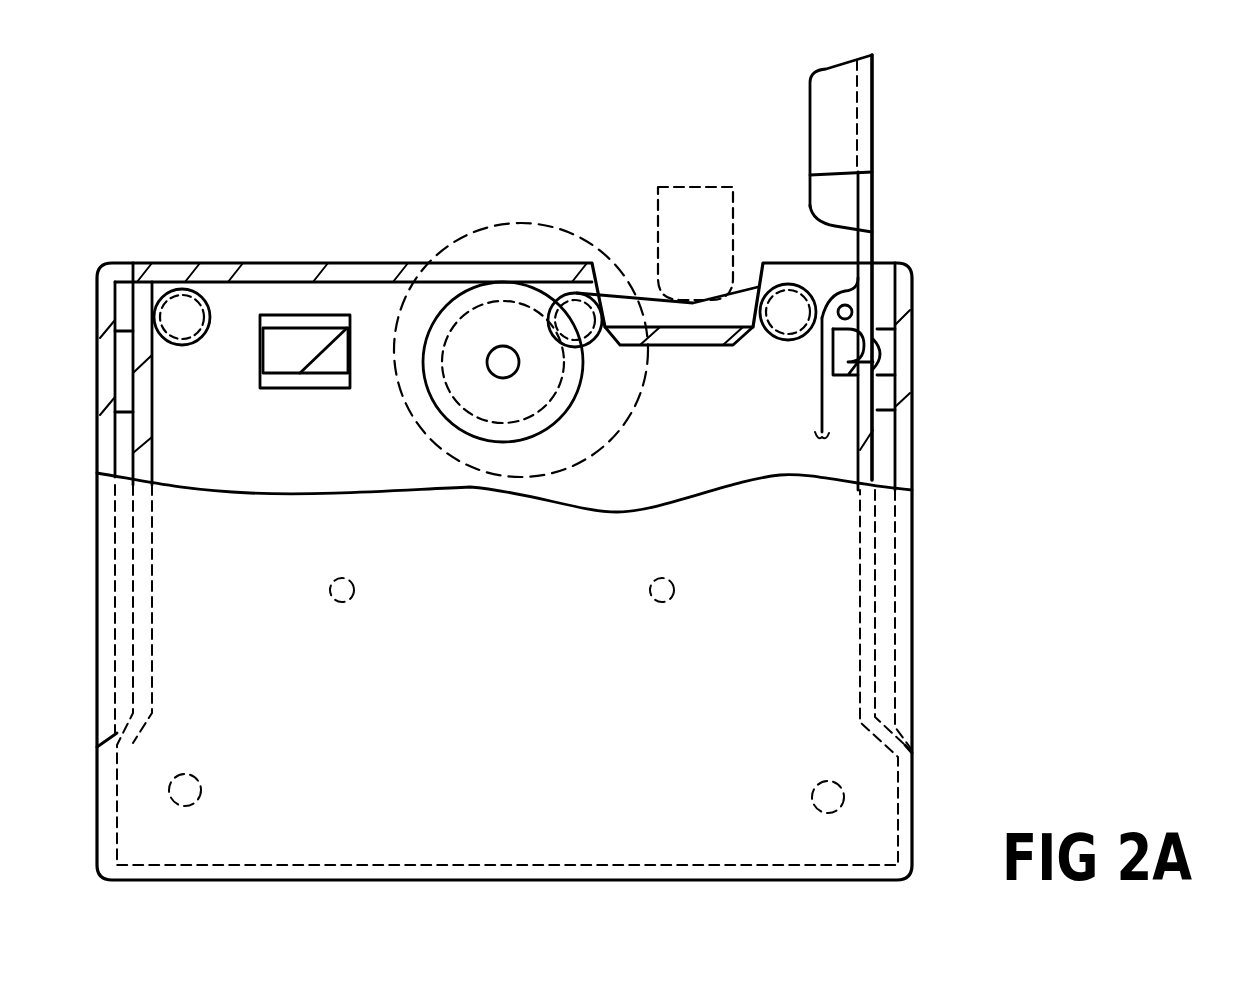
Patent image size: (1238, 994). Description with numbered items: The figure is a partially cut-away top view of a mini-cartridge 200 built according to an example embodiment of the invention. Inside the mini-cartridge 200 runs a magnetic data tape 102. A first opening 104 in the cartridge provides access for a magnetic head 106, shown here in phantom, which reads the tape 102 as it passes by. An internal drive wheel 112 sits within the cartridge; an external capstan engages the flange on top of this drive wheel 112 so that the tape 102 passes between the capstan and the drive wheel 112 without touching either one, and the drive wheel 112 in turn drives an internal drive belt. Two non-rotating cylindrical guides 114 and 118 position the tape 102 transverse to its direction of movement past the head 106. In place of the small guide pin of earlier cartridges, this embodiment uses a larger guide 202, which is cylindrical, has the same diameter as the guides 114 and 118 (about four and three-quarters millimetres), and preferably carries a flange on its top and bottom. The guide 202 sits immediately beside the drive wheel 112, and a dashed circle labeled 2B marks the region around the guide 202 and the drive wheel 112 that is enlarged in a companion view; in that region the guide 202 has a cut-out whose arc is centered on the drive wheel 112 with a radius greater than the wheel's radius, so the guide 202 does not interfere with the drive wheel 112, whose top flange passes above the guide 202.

The magnetic data tape 102 is at (822, 390).
The first opening 104 is at (633, 233).
The magnetic head 106 is at (705, 185).
The internal drive wheel 112 is at (478, 305).
The non-rotating cylindrical guide 114 is at (803, 290).
The non-rotating cylindrical guide 118 is at (191, 290).
The mini-cartridge 200 is at (915, 835).
The guide 202 is at (583, 343).
The detail view region 2B is at (448, 247).